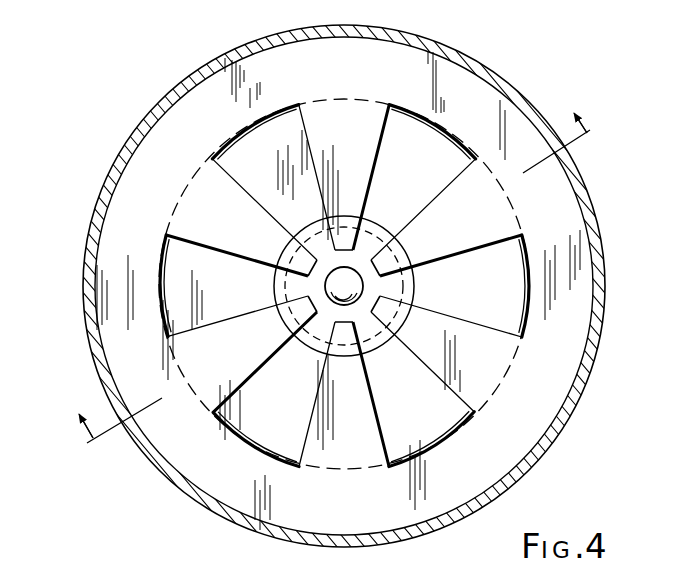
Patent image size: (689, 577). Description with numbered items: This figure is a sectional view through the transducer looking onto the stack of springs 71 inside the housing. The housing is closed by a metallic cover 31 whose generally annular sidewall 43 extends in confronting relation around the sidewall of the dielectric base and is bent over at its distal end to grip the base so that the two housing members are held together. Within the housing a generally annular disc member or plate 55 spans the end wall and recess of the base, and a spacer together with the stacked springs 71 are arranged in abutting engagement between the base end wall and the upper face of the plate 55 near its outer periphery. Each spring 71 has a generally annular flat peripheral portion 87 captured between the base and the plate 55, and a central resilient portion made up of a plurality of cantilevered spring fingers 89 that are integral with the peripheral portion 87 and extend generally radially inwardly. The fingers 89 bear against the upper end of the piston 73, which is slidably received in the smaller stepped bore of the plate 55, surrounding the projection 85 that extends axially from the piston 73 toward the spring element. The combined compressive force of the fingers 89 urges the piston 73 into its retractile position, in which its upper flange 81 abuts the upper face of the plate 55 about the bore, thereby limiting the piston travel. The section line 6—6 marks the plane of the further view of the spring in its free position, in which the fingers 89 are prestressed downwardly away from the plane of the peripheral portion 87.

The stacked springs 71 is at (106, 124).
The peripheral portion 87 is at (116, 191).
The cover 31 is at (92, 225).
The sidewall 43 is at (89, 256).
The plate 55 is at (172, 318).
The projection 85 is at (325, 285).
The upper flange 81 is at (412, 289).
The spring fingers 89 is at (452, 208).
The piston 73 is at (380, 337).
The section line 6- 6 is at (325, 267).